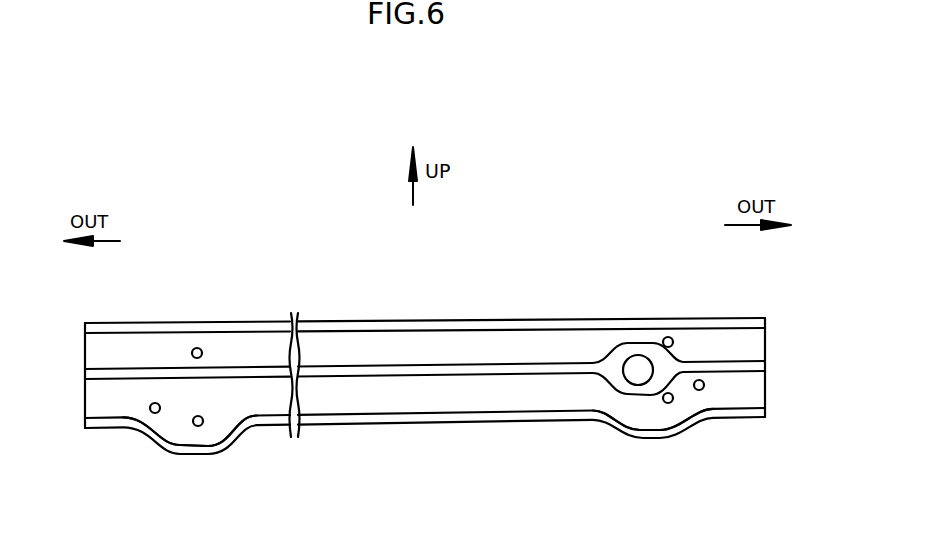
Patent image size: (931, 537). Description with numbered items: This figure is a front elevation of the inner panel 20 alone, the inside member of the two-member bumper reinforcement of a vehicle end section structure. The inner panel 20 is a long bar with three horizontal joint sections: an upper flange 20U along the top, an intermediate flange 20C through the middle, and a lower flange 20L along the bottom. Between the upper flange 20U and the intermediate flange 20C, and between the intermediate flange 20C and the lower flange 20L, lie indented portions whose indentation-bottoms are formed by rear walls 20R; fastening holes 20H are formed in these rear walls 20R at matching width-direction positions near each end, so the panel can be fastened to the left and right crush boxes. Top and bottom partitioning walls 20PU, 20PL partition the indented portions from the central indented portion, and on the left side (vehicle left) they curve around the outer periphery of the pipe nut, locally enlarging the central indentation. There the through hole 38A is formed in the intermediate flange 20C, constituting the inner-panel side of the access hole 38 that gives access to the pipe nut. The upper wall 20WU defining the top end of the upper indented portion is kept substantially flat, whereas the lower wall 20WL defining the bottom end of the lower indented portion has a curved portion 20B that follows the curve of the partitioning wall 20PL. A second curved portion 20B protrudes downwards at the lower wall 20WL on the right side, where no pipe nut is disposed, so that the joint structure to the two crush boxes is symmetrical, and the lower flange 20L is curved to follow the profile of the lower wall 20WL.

The inner panel 20 is at (564, 305).
The upper flange 20U is at (475, 325).
The intermediate flange 20C is at (422, 367).
The lower flange 20L is at (407, 425).
The curved portion 20B is at (205, 452).
The fastening holes 20H is at (197, 416).
The rear walls 20R is at (337, 390).
The upper partitioning wall 20PU is at (524, 367).
The lower partitioning wall 20PL is at (480, 377).
The upper wall 20WU is at (592, 328).
The lower wall 20WL is at (557, 420).
The through hole 38A is at (638, 375).
The access hole 38 is at (657, 427).